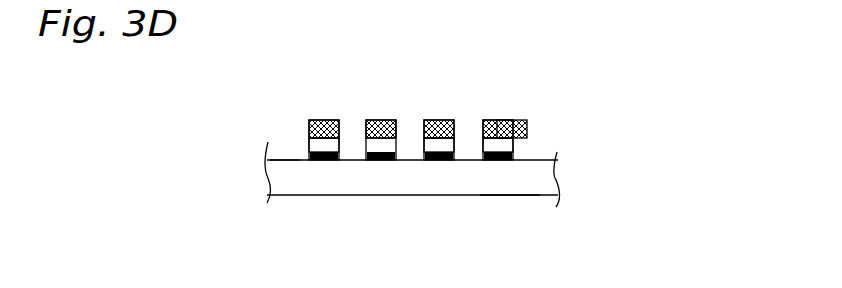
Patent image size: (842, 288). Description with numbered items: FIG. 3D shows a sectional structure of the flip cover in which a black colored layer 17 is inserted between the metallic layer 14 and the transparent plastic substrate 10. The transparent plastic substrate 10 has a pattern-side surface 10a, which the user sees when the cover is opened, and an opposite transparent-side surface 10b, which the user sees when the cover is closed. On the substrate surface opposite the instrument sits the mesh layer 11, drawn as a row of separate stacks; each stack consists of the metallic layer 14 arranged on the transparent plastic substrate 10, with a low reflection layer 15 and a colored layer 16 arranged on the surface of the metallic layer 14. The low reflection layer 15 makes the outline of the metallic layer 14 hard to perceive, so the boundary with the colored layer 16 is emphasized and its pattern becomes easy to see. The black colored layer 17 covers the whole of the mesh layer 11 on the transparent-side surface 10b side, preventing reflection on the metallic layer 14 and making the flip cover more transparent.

The transparent plastic substrate 10 is at (547, 184).
The pattern-side surface 10a is at (274, 124).
The transparent-side surface 10b is at (520, 206).
The mesh layer 11 is at (522, 120).
The metallic layer 14 is at (333, 145).
The low reflection layer 15 is at (327, 122).
The colored layer 16 is at (435, 122).
The black colored layer 17 is at (503, 150).